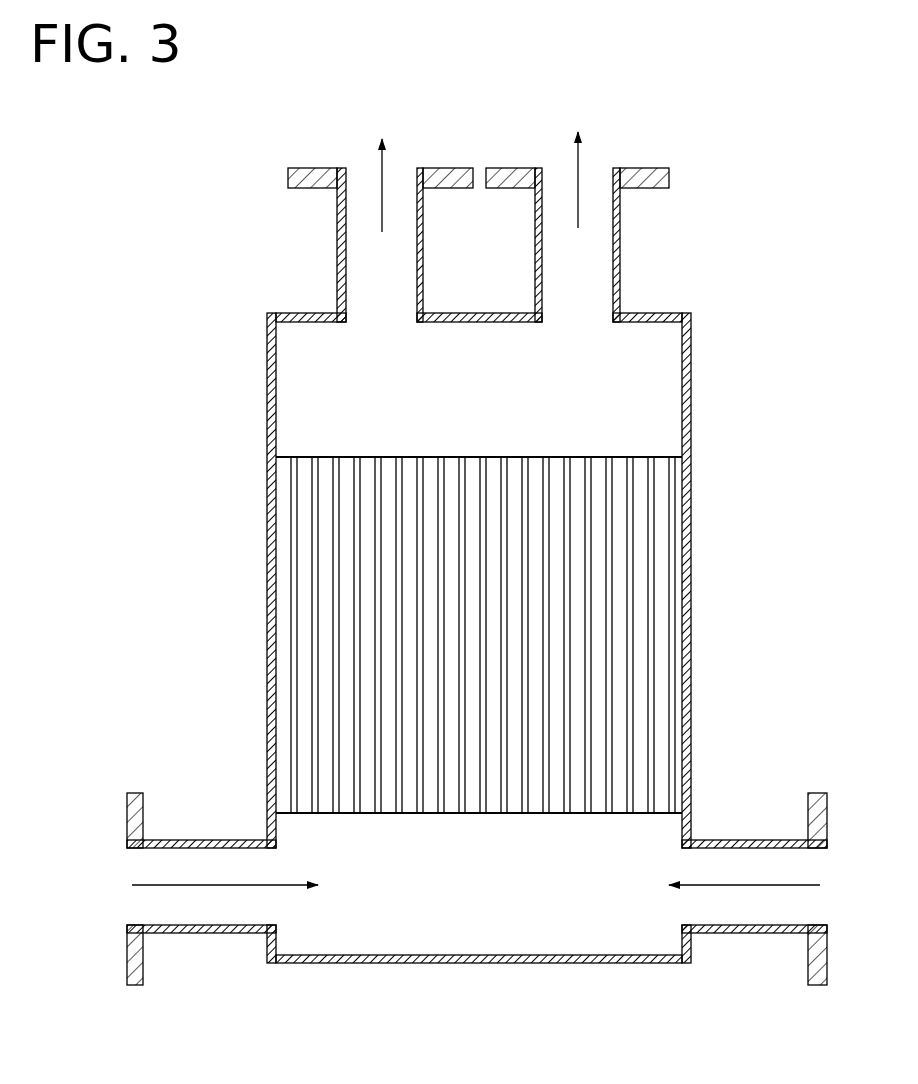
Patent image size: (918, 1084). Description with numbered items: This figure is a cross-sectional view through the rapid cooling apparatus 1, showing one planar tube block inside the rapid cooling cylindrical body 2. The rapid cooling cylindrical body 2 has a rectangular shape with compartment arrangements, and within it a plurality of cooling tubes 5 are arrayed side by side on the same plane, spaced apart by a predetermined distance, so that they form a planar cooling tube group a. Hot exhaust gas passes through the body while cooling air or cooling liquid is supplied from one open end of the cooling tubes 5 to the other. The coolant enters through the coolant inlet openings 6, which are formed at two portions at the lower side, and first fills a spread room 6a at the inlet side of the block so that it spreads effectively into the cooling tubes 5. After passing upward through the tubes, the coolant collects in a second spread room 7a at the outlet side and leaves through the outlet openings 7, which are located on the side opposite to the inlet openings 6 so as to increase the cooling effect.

The rapid cooling apparatus 1 is at (263, 531).
The rapid cooling cylindrical body 2 is at (684, 534).
The cooling tubes 5 is at (350, 723).
The coolant inlet openings 6 is at (150, 867).
The spread room 6a is at (332, 962).
The coolant outlet openings 7 is at (362, 183).
The spread room 7a is at (310, 378).
The planar cooling tube group a is at (640, 740).